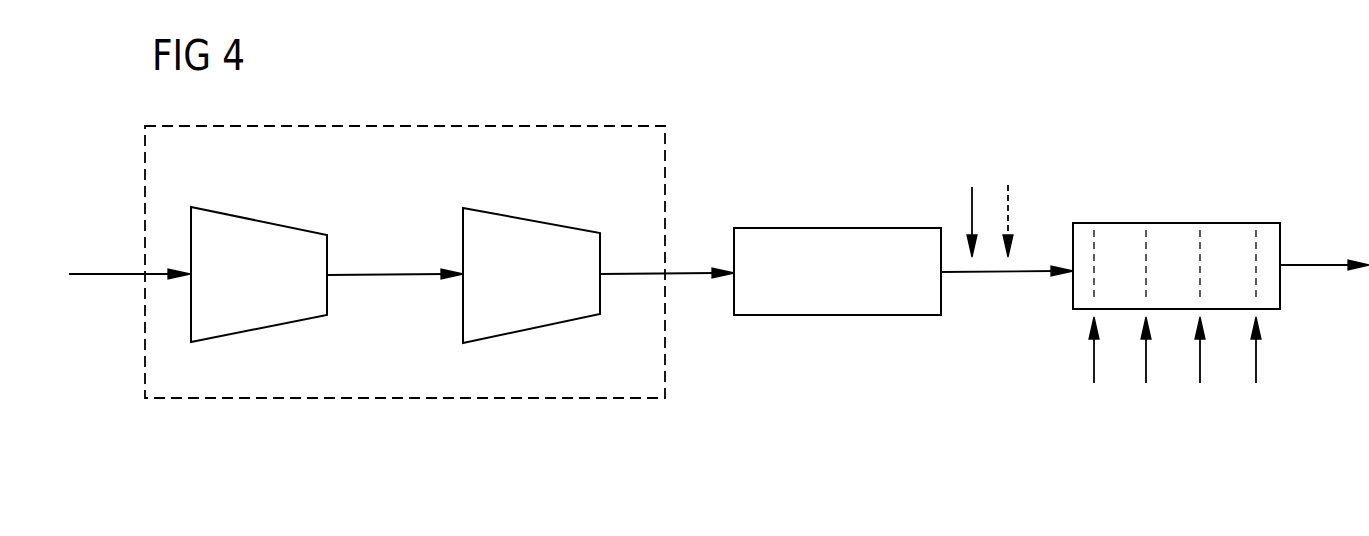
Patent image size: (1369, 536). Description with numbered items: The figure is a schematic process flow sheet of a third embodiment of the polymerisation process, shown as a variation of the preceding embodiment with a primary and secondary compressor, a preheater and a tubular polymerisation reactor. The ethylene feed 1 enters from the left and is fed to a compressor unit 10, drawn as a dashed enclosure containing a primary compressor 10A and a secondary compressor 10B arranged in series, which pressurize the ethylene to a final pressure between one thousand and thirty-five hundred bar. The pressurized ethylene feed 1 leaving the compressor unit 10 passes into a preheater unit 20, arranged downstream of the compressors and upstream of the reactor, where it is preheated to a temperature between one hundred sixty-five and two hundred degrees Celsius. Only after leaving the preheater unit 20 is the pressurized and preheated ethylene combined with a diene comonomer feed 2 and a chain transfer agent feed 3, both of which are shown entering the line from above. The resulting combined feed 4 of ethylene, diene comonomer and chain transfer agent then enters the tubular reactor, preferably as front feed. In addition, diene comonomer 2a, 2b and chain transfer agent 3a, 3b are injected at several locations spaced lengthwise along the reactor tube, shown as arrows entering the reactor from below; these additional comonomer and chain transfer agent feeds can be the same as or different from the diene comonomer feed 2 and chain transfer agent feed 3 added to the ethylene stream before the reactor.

The ethylene feed 1 is at (401, 255).
The compressor unit 10 is at (438, 125).
The primary compressor 10A is at (242, 217).
The secondary compressor 10B is at (522, 217).
The preheater unit 20 is at (828, 232).
The diene comonomer feed 2 is at (974, 207).
The chain transfer agent feed 3 is at (1010, 207).
The combined feed 4 is at (1007, 255).
The diene comonomer 2a is at (1093, 324).
The chain transfer agent 3a is at (1148, 324).
The diene comonomer 2b is at (1203, 324).
The chain transfer agent 3b is at (1254, 324).